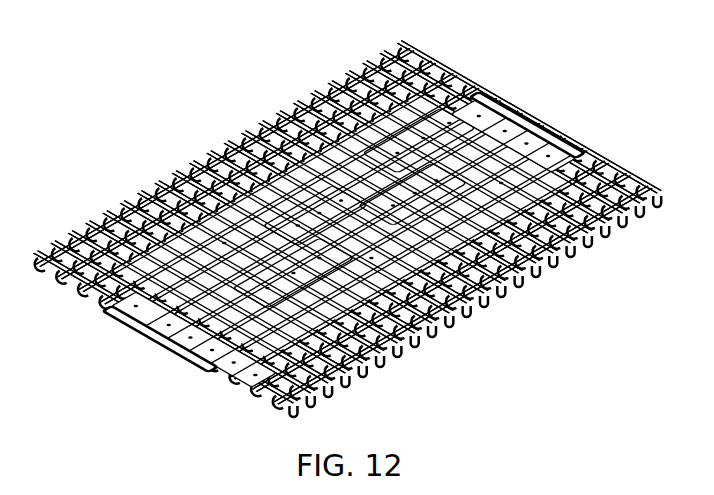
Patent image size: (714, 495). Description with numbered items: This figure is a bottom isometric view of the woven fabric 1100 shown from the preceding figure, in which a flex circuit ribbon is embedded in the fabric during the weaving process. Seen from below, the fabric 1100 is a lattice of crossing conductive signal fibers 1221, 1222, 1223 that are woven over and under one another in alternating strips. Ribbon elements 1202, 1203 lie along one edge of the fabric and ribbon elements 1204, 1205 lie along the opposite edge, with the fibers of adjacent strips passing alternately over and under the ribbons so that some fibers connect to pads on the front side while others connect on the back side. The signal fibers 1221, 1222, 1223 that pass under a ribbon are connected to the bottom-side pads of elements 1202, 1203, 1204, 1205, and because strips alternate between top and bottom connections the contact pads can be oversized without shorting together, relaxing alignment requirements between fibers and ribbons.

The lattice assembly 1100 is at (357, 243).
The first edge strip 1202 is at (125, 330).
The second edge strip 1203 is at (178, 359).
The third edge strip 1204 is at (510, 102).
The fourth edge strip 1205 is at (562, 135).
The first set of bars 1221 is at (295, 99).
The second set of bars 1222 is at (337, 72).
The third set of bars with clips 1223 is at (380, 50).